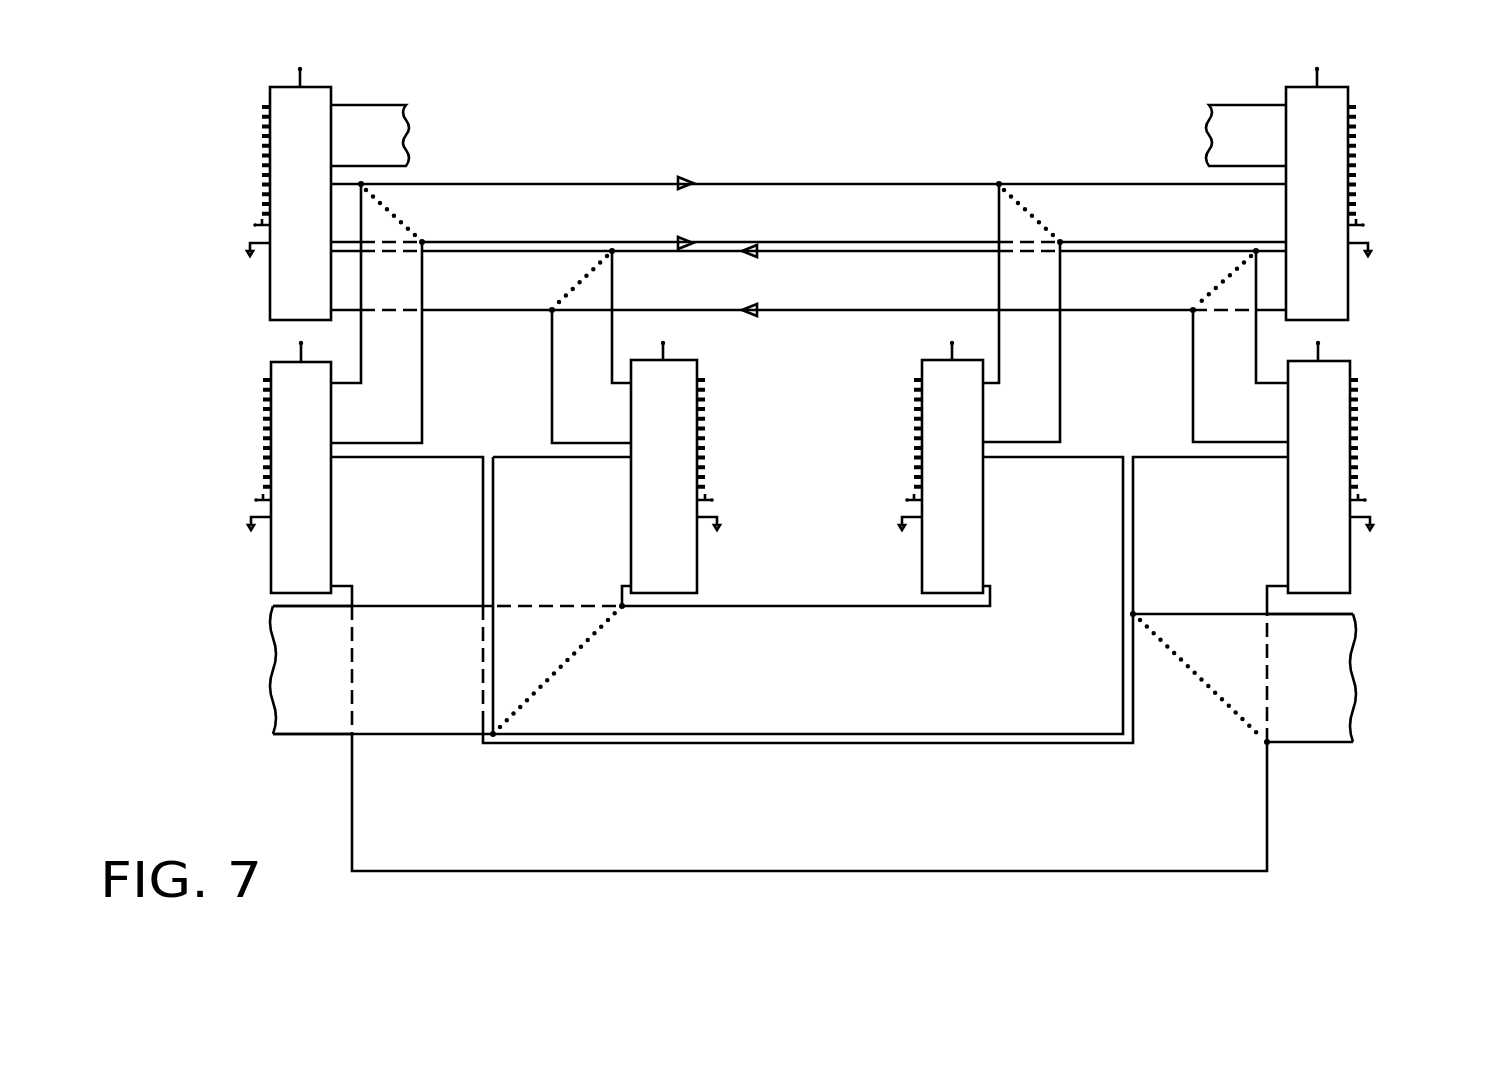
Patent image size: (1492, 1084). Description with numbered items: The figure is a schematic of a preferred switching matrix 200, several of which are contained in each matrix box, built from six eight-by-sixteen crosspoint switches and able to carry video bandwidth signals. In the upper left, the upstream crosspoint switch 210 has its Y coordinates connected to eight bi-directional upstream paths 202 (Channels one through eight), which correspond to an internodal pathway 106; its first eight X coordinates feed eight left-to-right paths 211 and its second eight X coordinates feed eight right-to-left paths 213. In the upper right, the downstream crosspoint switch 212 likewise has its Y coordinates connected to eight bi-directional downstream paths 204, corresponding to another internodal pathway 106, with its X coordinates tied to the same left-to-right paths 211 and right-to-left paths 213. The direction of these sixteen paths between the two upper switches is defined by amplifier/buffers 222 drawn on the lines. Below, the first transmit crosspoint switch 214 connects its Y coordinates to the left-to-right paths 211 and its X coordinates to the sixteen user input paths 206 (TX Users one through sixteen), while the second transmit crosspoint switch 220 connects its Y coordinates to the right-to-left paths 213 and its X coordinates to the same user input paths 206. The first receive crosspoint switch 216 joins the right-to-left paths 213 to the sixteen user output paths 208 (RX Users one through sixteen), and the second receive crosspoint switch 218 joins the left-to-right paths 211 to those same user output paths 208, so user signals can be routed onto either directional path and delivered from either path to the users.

The internodal pathway 106 is at (393, 103).
The switching matrix 200 is at (877, 179).
The bi-directional upstream paths 202 is at (420, 125).
The bi-directional downstream paths 204 is at (1193, 125).
The user input paths 206 is at (1320, 745).
The user output paths 208 is at (298, 737).
The upstream crosspoint switch 210 is at (331, 93).
The left-to-right paths 211 is at (575, 205).
The downstream crosspoint switch 212 is at (1286, 92).
The right-to-left paths 213 is at (453, 292).
The first transmit crosspoint switch 214 is at (271, 368).
The first receive crosspoint switch 216 is at (697, 368).
The second receive crosspoint switch 218 is at (921, 367).
The second transmit crosspoint switch 220 is at (1350, 370).
The amplifier/buffers 222 is at (684, 176).